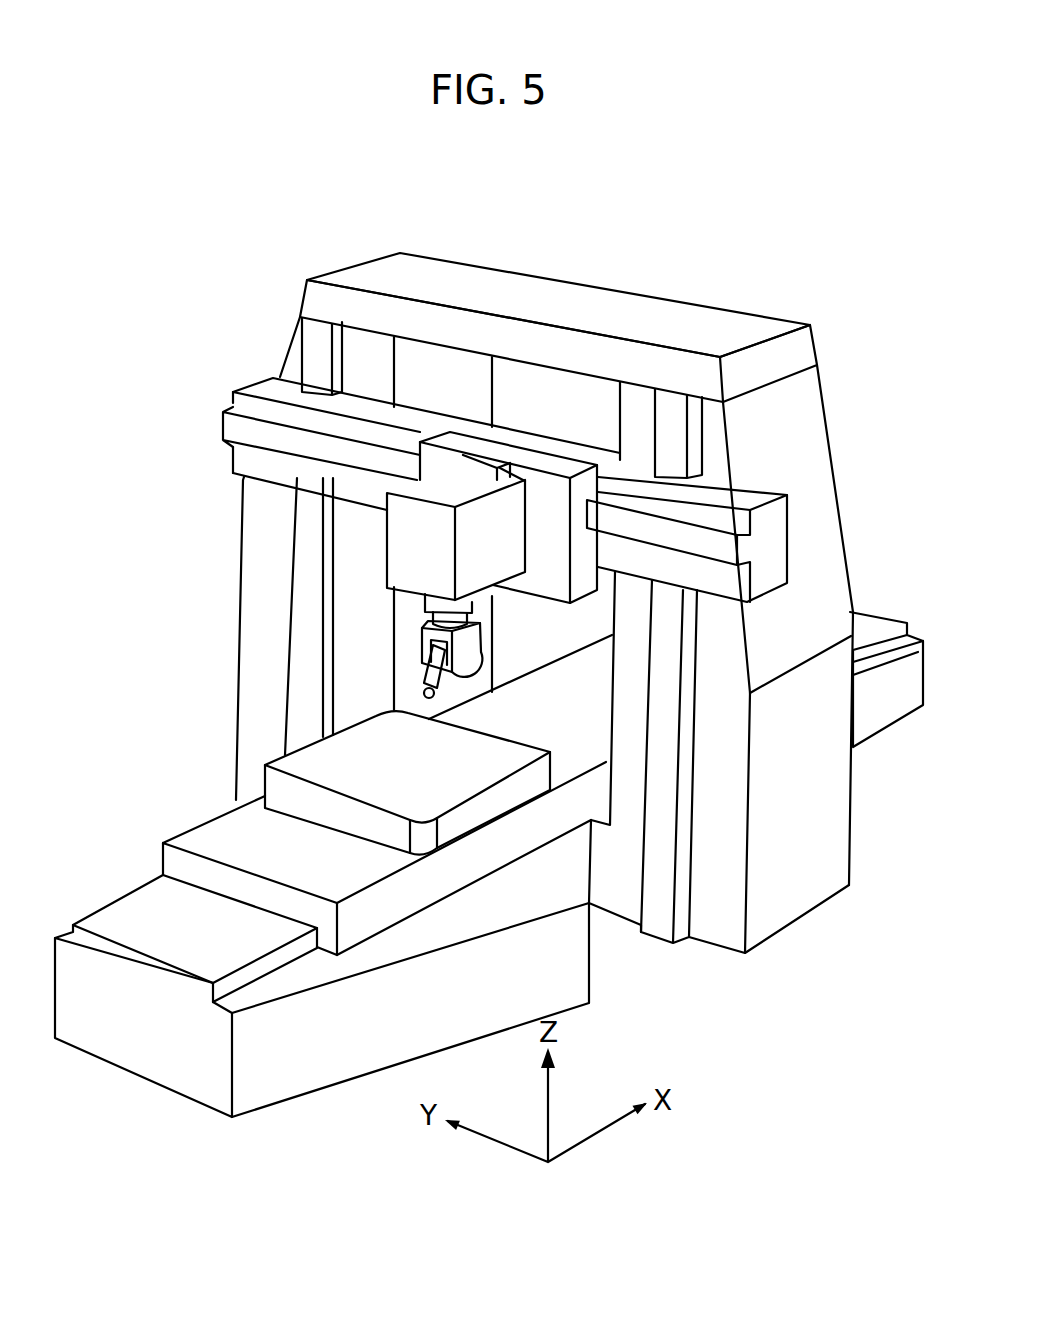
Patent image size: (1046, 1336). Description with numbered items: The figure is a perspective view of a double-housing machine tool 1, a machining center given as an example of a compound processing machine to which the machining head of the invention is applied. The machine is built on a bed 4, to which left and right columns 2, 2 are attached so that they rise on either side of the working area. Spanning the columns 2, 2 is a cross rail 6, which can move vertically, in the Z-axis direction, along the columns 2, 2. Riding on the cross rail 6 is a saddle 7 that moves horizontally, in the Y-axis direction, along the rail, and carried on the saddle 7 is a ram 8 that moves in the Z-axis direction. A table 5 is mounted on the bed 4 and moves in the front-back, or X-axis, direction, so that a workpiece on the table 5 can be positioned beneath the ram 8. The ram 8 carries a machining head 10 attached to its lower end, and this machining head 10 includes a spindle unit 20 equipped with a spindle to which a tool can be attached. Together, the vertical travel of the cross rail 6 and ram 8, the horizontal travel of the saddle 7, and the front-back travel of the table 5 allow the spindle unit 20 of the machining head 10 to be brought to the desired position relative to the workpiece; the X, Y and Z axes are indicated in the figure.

The double-housing machine tool 1 is at (760, 296).
The column 2 is at (262, 540).
The bed 4 is at (150, 907).
The table 5 is at (482, 808).
The cross rail 6 is at (273, 390).
The saddle 7 is at (493, 452).
The ram 8 is at (413, 548).
The machining head 10 is at (498, 648).
The spindle unit 20 is at (449, 677).